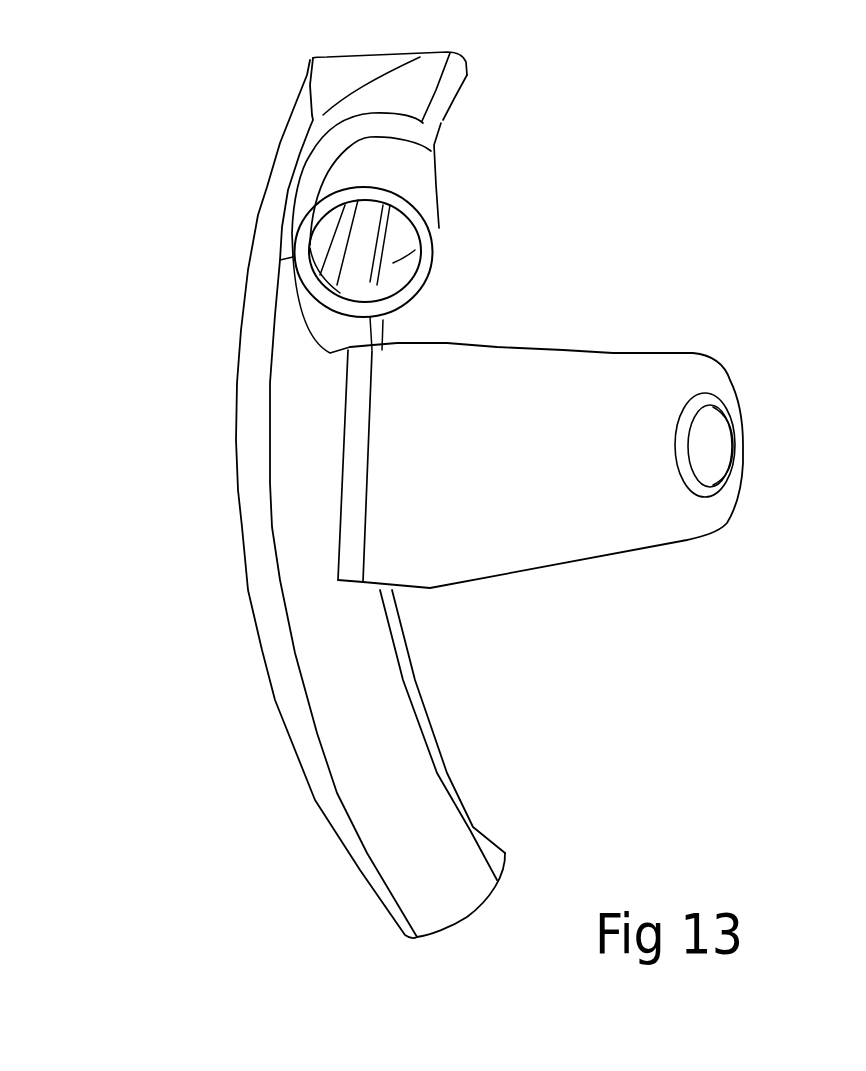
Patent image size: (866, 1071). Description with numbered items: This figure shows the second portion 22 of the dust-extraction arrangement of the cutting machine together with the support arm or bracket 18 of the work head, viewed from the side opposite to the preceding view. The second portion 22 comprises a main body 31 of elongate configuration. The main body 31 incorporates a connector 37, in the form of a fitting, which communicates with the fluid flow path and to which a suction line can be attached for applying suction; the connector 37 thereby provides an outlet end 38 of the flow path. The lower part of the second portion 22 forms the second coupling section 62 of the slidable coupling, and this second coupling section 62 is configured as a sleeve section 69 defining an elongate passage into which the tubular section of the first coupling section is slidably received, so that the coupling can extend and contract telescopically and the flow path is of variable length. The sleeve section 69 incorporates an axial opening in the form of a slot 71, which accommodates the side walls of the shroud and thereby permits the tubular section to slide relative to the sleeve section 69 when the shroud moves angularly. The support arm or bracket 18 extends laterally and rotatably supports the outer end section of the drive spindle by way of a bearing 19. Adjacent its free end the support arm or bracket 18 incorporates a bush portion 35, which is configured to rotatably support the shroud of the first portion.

The second portion 22 is at (190, 208).
The slot 71 is at (443, 120).
The connector 37 is at (407, 183).
The outlet end 38 is at (318, 268).
The main body 31 is at (270, 548).
The second coupling section 62 is at (308, 740).
The support arm or bracket 18 is at (613, 505).
The bush portion 35 is at (707, 435).
The bearing 19 is at (710, 475).
The sleeve section 69 is at (440, 768).